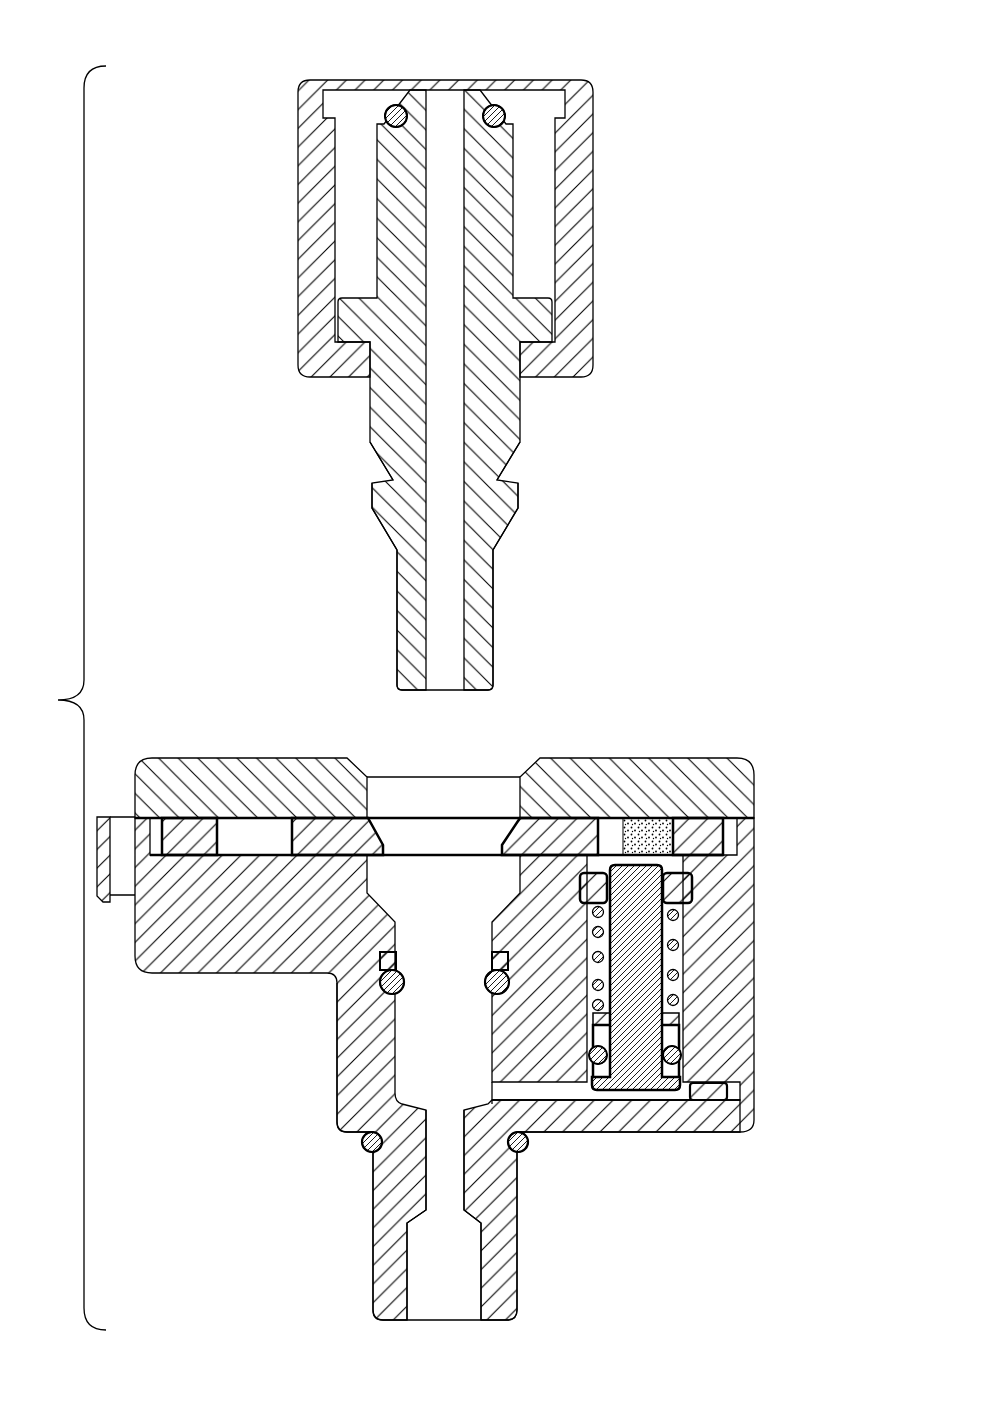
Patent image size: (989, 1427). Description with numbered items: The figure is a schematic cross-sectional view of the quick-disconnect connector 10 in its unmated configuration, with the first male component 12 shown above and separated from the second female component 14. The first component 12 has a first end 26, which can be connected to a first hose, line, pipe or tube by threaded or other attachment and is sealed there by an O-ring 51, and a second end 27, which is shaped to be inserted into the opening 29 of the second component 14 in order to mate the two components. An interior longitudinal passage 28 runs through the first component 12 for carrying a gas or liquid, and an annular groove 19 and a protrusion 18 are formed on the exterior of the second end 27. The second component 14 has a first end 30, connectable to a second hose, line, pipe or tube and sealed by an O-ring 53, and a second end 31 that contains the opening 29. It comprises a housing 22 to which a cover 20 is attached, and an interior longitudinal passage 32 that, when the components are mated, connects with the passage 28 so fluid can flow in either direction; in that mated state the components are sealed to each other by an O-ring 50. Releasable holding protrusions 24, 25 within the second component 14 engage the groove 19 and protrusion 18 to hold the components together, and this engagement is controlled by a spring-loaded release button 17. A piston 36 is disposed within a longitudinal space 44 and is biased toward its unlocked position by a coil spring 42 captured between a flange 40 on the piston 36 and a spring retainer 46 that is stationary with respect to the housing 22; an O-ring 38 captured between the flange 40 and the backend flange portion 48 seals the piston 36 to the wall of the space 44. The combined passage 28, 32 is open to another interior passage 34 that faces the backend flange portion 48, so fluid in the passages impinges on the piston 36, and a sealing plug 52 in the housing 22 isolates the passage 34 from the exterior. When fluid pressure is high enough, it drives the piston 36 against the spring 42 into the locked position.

The quick-disconnect connector 10 is at (65, 698).
The first male component 12 is at (295, 255).
The second female component 14 is at (227, 973).
The release button 17 is at (118, 830).
The protrusion 18 is at (522, 490).
The annular groove 19 is at (512, 458).
The cover 20 is at (735, 785).
The housing 22 is at (315, 935).
The releasable holding protrusion 24 is at (323, 840).
The releasable holding protrusion 25 is at (520, 838).
The first end 26 is at (353, 58).
The second end 27 is at (492, 620).
The interior longitudinal passage 28 is at (448, 100).
The opening 29 is at (400, 746).
The first end 30 is at (398, 1335).
The second end 31 is at (691, 735).
The interior longitudinal passage 32 is at (445, 1150).
The interior passage 34 is at (556, 1102).
The piston 36 is at (665, 975).
The O-ring 38 is at (678, 1057).
The flange 40 is at (683, 1030).
The coil spring 42 is at (683, 913).
The longitudinal space 44 is at (672, 930).
The spring retainer 46 is at (693, 883).
The backend flange portion 48 is at (666, 1092).
The O-ring 50 is at (507, 972).
The O-ring 51 is at (505, 110).
The sealing plug 52 is at (740, 1090).
The O-ring 53 is at (362, 1152).